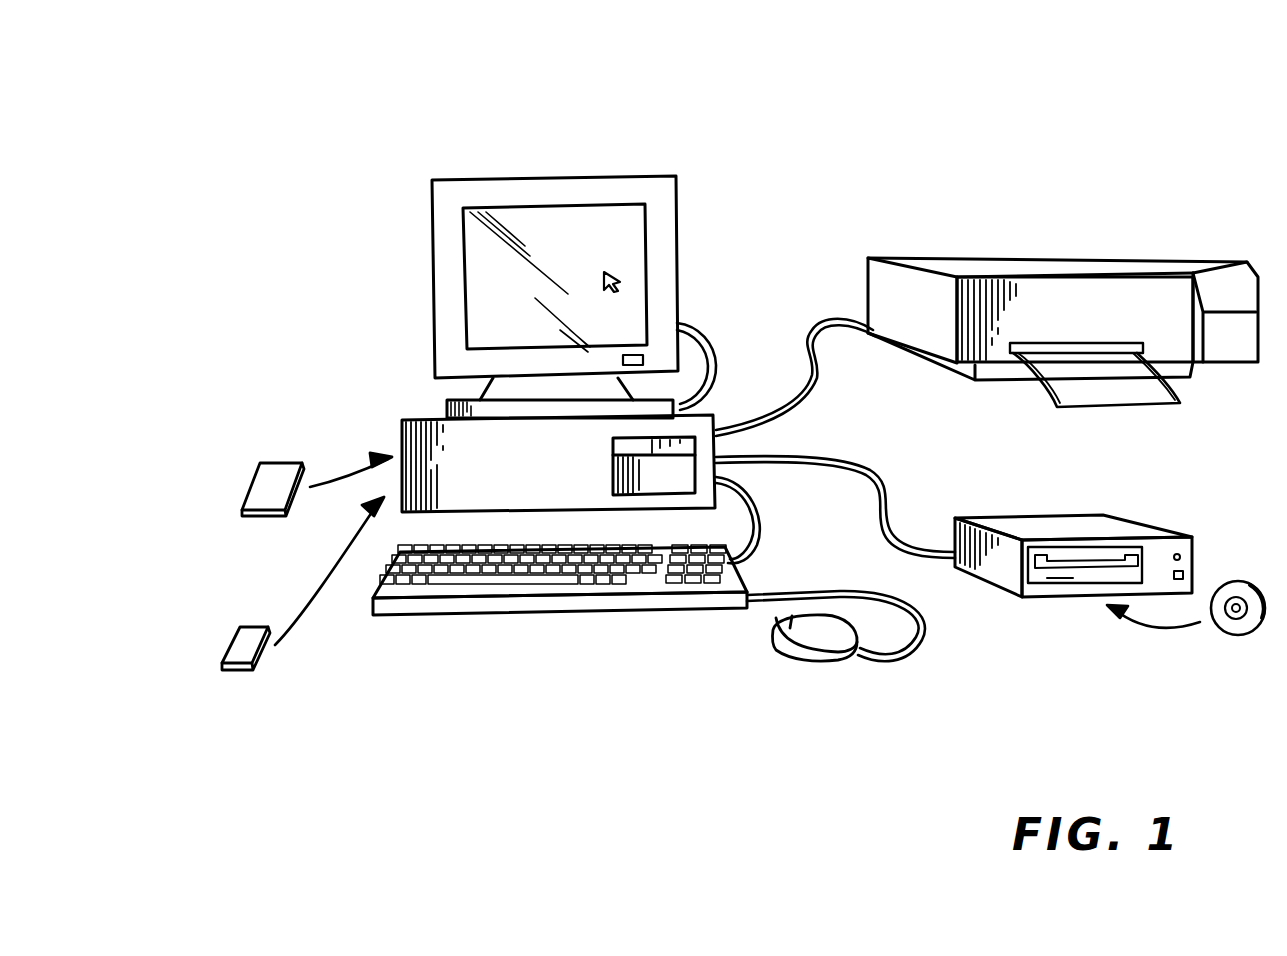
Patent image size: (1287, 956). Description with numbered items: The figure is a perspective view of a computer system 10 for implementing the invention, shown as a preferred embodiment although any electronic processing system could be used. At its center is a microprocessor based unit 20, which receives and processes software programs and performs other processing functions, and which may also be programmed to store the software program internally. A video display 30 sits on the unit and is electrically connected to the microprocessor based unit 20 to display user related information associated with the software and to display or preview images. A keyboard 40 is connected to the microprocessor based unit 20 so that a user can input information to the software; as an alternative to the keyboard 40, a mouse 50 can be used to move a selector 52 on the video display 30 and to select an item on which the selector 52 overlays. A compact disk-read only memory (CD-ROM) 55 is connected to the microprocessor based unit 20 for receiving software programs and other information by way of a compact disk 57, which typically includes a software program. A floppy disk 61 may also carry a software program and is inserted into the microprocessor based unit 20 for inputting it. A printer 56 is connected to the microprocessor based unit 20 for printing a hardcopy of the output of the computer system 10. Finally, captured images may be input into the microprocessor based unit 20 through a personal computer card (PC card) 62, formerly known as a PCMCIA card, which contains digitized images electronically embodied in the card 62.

The computer system 10 is at (808, 166).
The microprocessor based unit 20 is at (418, 419).
The video display 30 is at (573, 177).
The keyboard 40 is at (475, 610).
The mouse 50 is at (803, 660).
The selector 52 is at (619, 283).
The compact disk-read only memory (CD-ROM) 55 is at (987, 517).
The printer 56 is at (938, 252).
The compact disk 57 is at (1228, 628).
The floppy disk 61 is at (255, 518).
The personal computer card (PC card) 62 is at (235, 628).